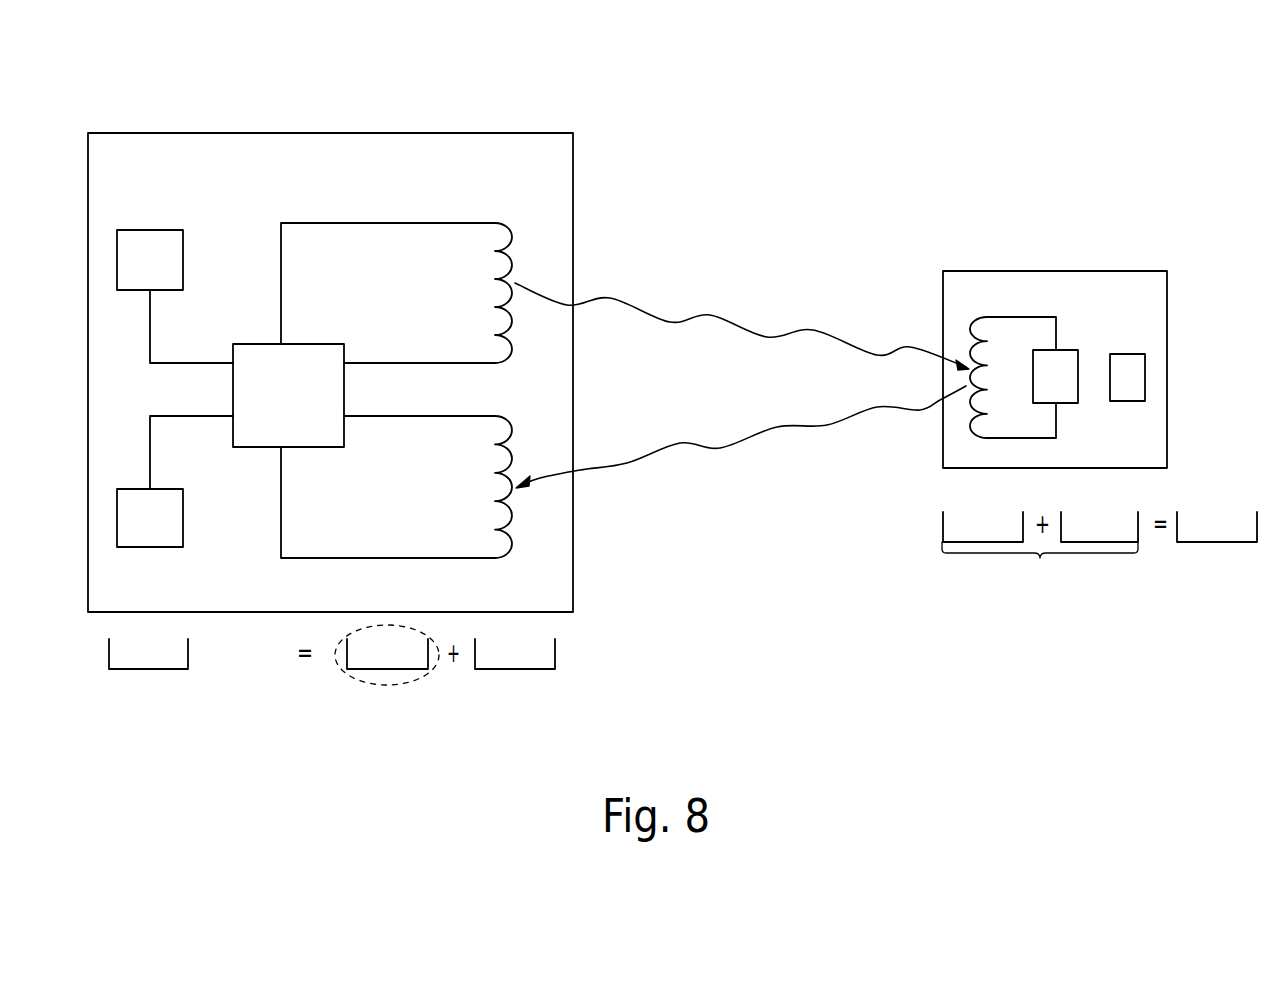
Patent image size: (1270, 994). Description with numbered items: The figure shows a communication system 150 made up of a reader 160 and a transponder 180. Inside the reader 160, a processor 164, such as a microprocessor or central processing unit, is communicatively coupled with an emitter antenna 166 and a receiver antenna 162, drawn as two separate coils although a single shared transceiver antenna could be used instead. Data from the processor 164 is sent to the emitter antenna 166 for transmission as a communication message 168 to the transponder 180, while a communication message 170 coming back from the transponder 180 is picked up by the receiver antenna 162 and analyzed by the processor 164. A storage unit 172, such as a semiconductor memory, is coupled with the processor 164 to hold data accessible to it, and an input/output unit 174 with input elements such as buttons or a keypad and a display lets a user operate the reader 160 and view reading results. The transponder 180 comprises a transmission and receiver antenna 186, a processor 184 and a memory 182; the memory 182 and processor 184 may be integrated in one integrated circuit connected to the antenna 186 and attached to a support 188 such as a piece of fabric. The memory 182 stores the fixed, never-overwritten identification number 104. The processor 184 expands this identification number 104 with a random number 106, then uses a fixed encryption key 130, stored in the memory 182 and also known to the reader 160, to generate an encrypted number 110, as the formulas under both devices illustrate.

The identification number 104 is at (385, 669).
The random number 106 is at (517, 669).
The encrypted number 110 is at (137, 669).
The encryption key 130 is at (237, 665).
The communication system 150 is at (935, 138).
The reader 160 is at (340, 132).
The receiver antenna 162 is at (503, 417).
The processor 164 is at (305, 344).
The emitter antenna 166 is at (512, 232).
The communication message 168 is at (723, 315).
The communication message 170 is at (737, 445).
The storage unit 172 is at (150, 230).
The input/output unit 174 is at (160, 548).
The transponder 180 is at (1107, 271).
The memory 182 is at (1145, 373).
The processor 184 is at (1062, 350).
The transmission and receiver antenna 186 is at (970, 327).
The support 188 is at (1007, 283).